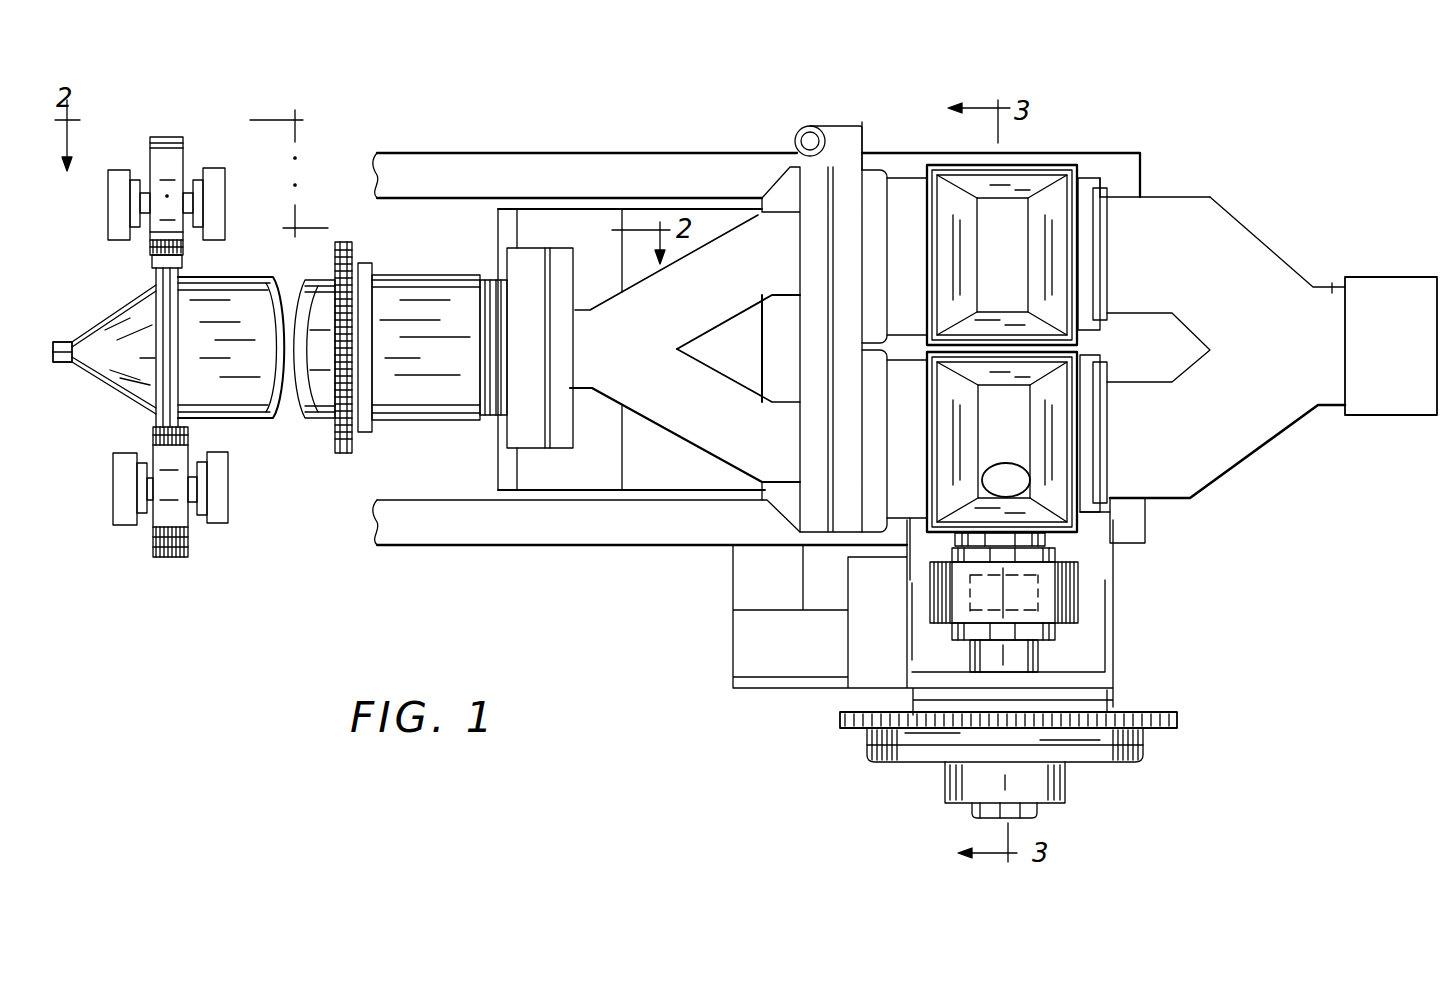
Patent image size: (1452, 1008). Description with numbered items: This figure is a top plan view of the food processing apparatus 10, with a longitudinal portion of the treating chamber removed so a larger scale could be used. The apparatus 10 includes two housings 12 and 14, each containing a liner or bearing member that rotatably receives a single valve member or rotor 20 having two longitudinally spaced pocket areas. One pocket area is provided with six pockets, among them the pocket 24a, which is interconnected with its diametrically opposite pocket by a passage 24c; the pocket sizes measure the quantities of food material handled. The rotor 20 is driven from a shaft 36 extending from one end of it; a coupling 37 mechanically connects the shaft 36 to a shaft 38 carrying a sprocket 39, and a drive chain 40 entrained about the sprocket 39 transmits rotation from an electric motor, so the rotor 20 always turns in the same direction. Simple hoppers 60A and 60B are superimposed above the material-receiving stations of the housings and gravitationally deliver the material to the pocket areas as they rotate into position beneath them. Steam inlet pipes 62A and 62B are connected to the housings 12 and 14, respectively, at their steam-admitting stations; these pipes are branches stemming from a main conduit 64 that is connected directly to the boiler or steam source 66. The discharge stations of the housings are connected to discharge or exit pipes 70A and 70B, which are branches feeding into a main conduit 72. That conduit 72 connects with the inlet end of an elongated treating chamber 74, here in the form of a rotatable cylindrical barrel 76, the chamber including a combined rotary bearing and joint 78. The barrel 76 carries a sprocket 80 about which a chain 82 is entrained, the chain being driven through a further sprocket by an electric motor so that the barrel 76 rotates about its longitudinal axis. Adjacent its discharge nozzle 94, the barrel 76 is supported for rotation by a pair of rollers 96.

The processing apparatus 10 is at (627, 143).
The housing 12 is at (1111, 513).
The housing 14 is at (1086, 182).
The valve member or rotor 20 is at (999, 287).
The pocket 24a is at (1018, 421).
The passage 24c is at (1005, 465).
The shaft 36 is at (1048, 538).
The coupling 37 is at (1079, 596).
The shaft 38 is at (1039, 656).
The sprocket 39 is at (1126, 726).
The drive chain 40 is at (858, 736).
The hopper 60A is at (1068, 474).
The hopper 60B is at (1063, 211).
The steam inlet pipe 62A is at (1261, 441).
The steam inlet pipe 62B is at (1213, 236).
The main conduit 64 is at (1332, 290).
The boiler or steam source 66 is at (1422, 409).
The discharge or exit pipe 70A is at (735, 418).
The discharge or exit pipe 70B is at (736, 299).
The main conduit 72 is at (582, 395).
The elongated treating chamber 74 is at (238, 424).
The rotatable cylindrical barrel 76 is at (220, 280).
The combined rotary bearing and joint 78 is at (423, 421).
The sprocket 80 is at (343, 257).
The chain 82 is at (337, 433).
The discharge nozzle 94 is at (58, 362).
The rollers 96 is at (164, 142).